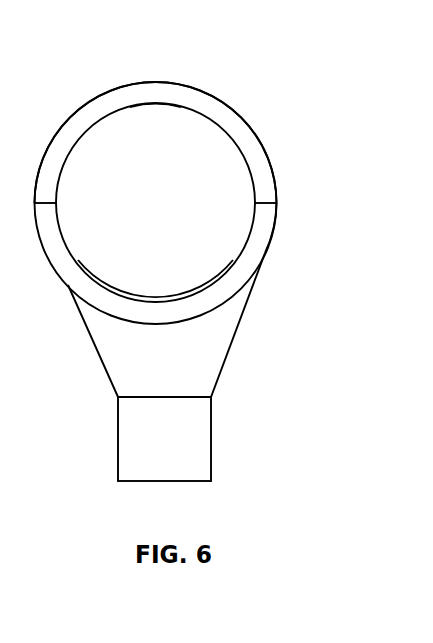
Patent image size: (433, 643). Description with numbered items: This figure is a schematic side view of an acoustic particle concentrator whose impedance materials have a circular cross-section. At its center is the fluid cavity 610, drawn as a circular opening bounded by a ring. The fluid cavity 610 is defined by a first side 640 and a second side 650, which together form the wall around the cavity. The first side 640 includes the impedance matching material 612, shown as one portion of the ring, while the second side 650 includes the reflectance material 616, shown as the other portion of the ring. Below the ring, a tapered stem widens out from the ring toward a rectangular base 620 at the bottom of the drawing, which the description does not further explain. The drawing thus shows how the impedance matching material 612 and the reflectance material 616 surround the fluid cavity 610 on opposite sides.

The fluid cavity 610 is at (84, 136).
The impedance matching material 612 is at (265, 253).
The reflectance material 616 is at (224, 100).
The base stem 620 is at (118, 445).
The first side 640 is at (112, 301).
The second side 650 is at (152, 97).